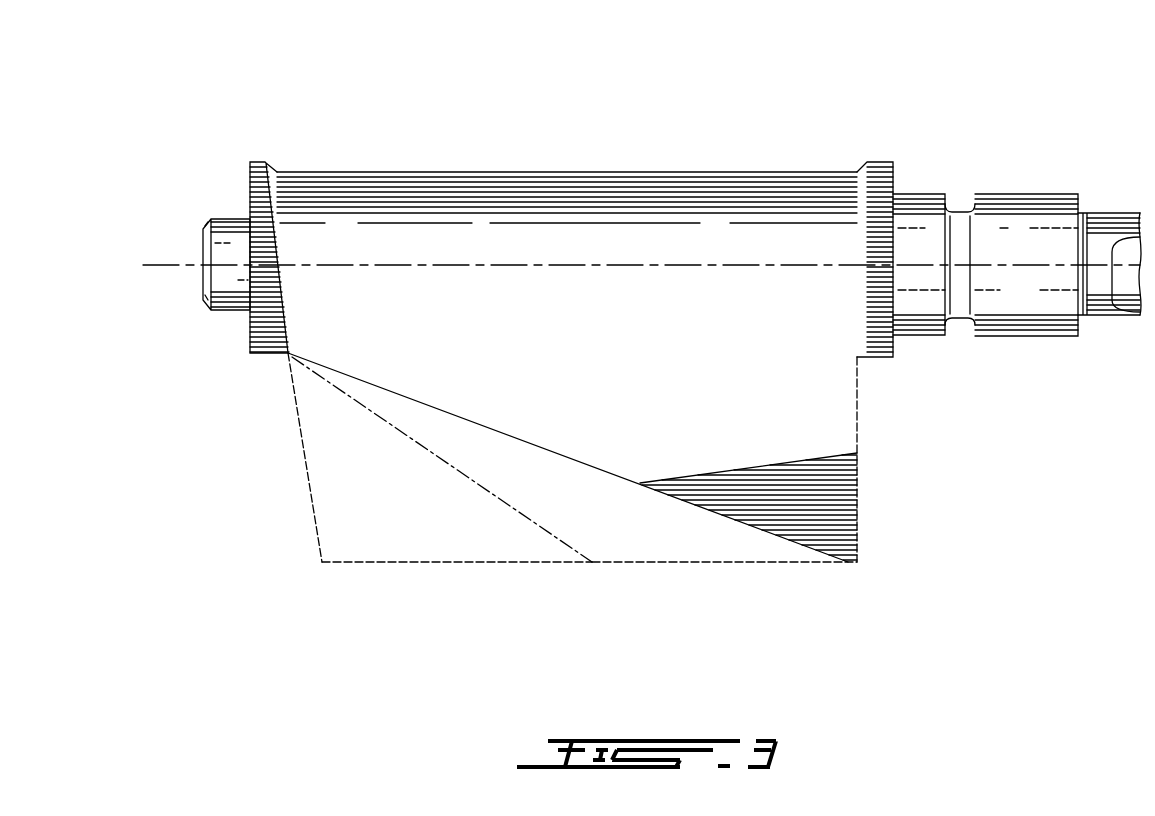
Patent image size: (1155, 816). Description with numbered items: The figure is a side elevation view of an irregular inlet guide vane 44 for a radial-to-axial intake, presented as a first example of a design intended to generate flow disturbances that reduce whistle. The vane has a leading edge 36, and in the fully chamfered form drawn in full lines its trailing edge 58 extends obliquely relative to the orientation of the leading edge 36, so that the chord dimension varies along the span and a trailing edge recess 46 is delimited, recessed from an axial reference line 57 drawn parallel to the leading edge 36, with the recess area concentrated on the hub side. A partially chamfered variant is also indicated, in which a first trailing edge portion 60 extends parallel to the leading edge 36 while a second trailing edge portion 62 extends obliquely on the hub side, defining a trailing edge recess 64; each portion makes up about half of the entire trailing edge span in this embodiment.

The irregular guide vane 44 is at (816, 128).
The leading edge 36 is at (578, 171).
The trailing edge recess 46 is at (547, 491).
The axial reference line 57 is at (401, 563).
The trailing edge 58 is at (588, 462).
The first trailing edge portion 60 is at (677, 563).
The second trailing edge portion 62 is at (412, 436).
The trailing edge recess 64 is at (427, 533).